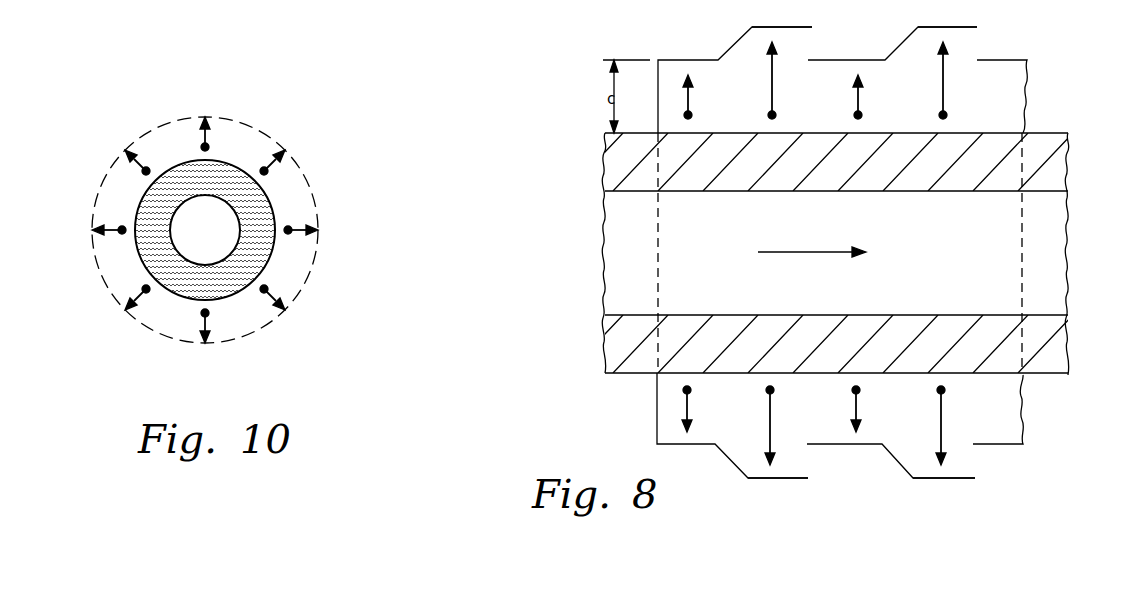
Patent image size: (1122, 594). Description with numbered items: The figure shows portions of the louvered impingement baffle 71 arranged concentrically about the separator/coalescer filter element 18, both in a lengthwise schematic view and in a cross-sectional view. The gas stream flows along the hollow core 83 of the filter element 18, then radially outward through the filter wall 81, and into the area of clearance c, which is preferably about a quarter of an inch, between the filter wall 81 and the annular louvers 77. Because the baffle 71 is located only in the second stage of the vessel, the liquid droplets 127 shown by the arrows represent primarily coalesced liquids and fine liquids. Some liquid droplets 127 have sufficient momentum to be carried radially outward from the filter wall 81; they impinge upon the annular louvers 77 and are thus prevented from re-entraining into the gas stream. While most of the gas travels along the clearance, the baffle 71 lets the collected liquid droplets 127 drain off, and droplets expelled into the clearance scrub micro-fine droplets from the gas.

In FIG. 10, the separator/coalescer filter element 18 is at (128, 264).
In FIG. 8, the separator/coalescer filter element 18 is at (595, 342).
In FIG. 8, the louvered impingement baffle 71 is at (686, 50).
In FIG. 10, the annular louvers 77 is at (265, 134).
In FIG. 8, the annular louvers 77 is at (775, 27).
In FIG. 10, the filter wall 81 is at (270, 198).
In FIG. 8, the filter wall 81 is at (1050, 133).
In FIG. 10, the hollow core 83 is at (222, 248).
In FIG. 8, the hollow core 83 is at (616, 264).
In FIG. 10, the liquid droplets 127 is at (146, 146).
In FIG. 8, the liquid droplets 127 is at (692, 112).